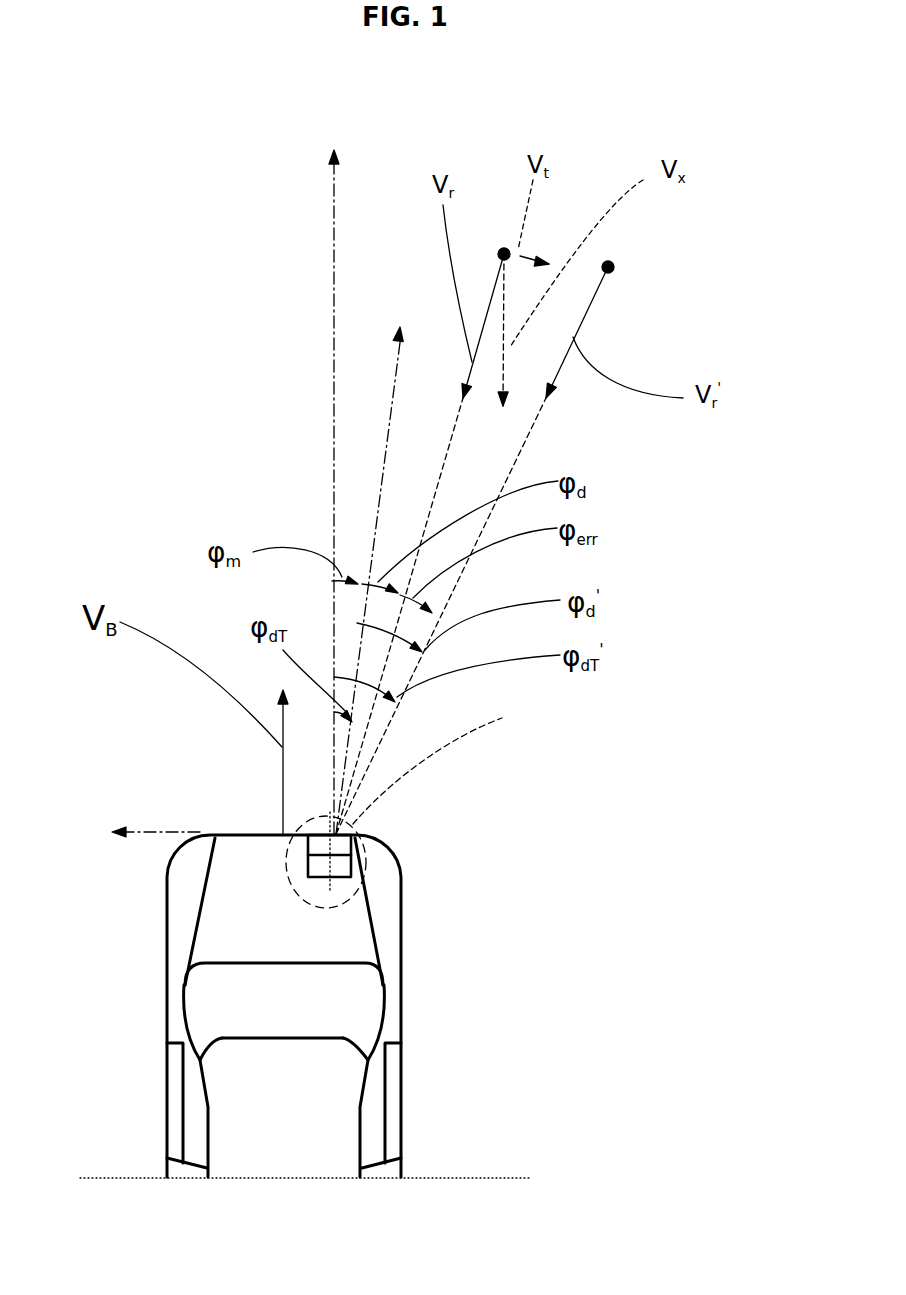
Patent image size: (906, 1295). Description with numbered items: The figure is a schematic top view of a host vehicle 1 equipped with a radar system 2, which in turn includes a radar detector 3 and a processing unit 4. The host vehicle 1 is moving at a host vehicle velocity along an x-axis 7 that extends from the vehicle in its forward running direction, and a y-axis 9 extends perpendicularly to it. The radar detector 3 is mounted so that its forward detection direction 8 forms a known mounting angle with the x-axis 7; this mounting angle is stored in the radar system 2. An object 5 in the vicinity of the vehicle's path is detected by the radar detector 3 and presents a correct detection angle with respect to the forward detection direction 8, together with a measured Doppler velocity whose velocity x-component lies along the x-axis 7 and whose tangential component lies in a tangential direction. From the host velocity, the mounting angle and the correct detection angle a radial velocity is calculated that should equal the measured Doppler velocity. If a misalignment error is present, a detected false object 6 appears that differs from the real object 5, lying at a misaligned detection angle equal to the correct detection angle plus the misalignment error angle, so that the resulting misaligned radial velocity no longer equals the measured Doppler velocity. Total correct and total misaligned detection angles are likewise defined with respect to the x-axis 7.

The host vehicle 1 is at (268, 1105).
The radar system 2 is at (440, 762).
The radar detector 3 is at (352, 837).
The processing unit 4 is at (352, 853).
The object 5 is at (504, 253).
The detected false object 6 is at (610, 267).
The x-axis 7 is at (332, 228).
The forward detection direction 8 is at (373, 510).
The y-axis 9 is at (177, 832).